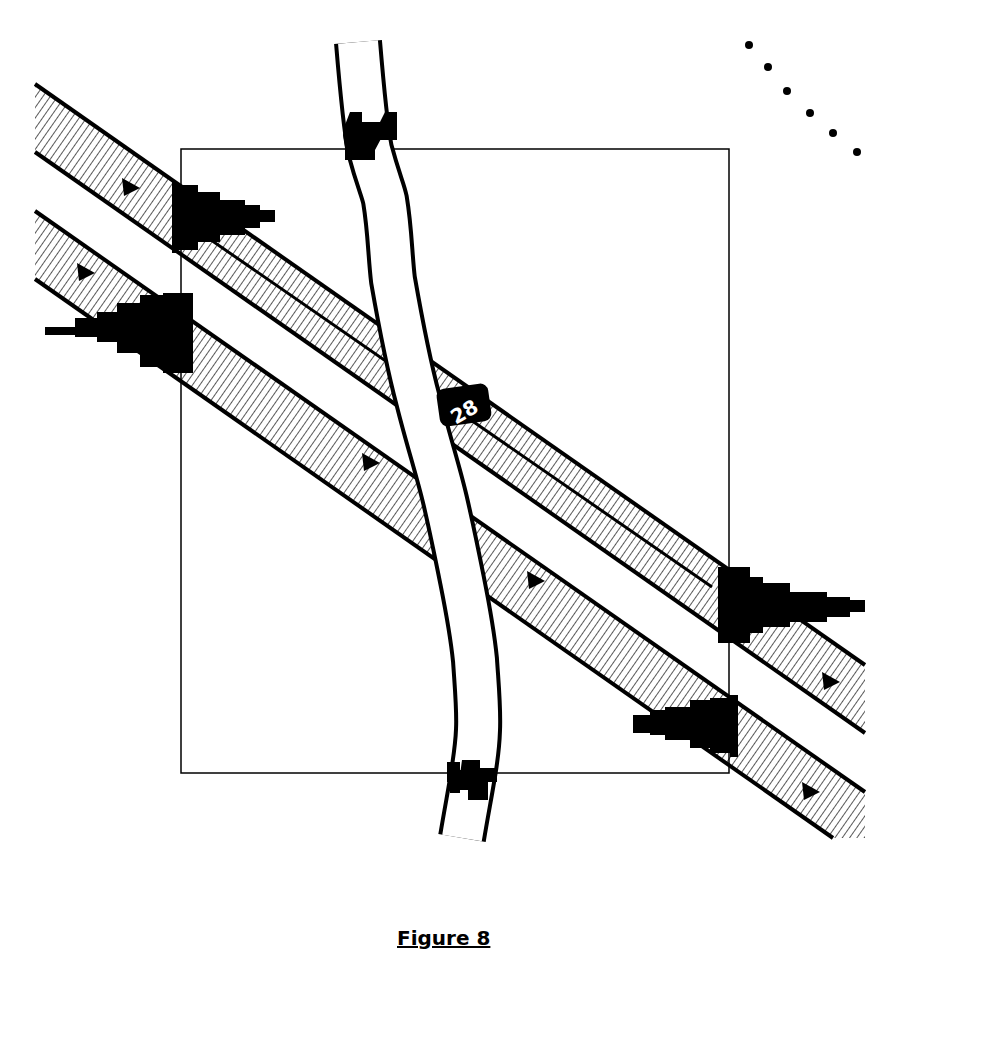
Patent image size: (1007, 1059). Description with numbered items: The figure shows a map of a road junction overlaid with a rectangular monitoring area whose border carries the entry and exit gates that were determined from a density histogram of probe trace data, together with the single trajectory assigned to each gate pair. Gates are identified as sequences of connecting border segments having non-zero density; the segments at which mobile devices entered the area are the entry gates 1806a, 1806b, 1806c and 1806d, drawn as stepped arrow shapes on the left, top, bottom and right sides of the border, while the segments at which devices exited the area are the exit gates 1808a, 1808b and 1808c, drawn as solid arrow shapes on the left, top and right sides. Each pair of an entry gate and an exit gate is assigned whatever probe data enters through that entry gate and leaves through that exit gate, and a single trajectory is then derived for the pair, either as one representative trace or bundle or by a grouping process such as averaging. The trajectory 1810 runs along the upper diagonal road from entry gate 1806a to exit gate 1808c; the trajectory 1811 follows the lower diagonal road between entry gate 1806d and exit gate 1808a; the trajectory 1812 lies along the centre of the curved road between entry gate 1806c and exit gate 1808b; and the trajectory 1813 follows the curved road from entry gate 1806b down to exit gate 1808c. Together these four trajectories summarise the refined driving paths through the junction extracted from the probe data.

The entry gate 1806a is at (170, 202).
The entry gate 1806b is at (394, 126).
The entry gate 1806c is at (447, 790).
The entry gate 1806d is at (747, 754).
The exit gate 1808a is at (208, 352).
The exit gate 1808b is at (343, 165).
The exit gate 1808c is at (708, 578).
The trajectory 1810 is at (582, 494).
The trajectory 1811 is at (350, 450).
The trajectory 1812 is at (463, 580).
The trajectory 1813 is at (417, 302).